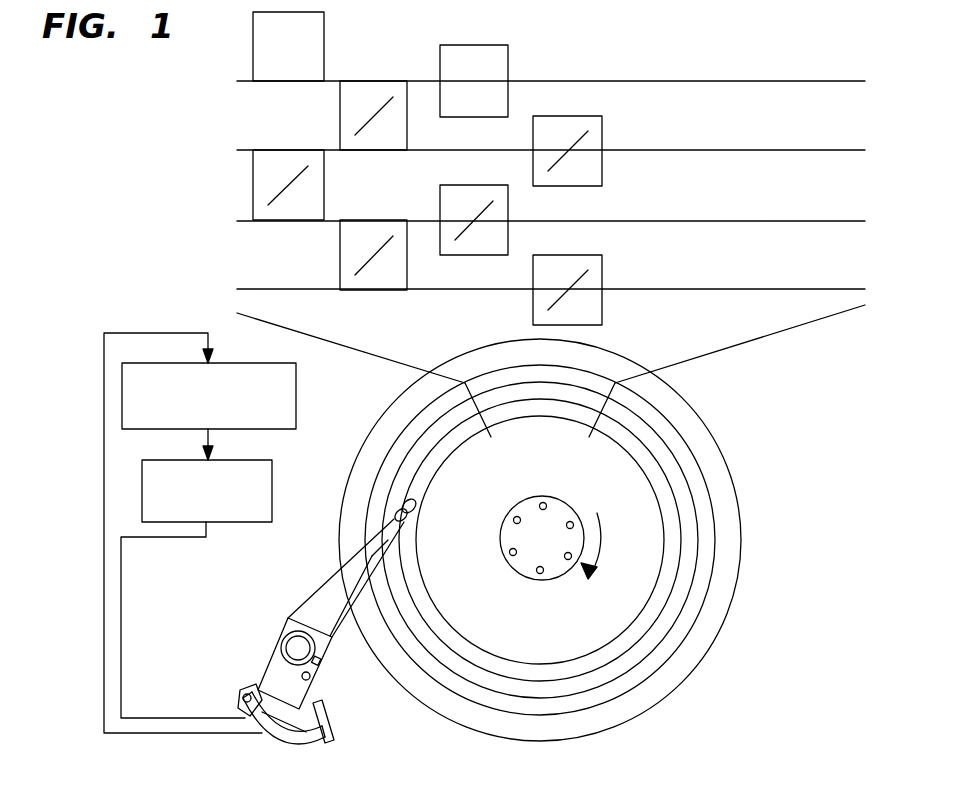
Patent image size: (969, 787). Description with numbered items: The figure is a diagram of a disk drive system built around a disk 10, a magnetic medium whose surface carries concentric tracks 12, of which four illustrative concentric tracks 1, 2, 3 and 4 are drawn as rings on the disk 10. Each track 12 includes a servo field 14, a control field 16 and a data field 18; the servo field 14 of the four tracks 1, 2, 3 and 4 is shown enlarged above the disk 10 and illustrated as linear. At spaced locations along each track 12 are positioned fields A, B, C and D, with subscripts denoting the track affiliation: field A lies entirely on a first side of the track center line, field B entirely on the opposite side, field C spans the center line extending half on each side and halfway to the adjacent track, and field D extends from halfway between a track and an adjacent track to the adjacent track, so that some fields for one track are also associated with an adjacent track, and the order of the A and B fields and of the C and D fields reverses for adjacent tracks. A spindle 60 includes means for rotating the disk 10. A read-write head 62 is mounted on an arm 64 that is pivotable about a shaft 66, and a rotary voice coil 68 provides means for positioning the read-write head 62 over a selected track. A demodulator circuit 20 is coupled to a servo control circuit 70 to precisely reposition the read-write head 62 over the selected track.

The concentric track 1 is at (713, 517).
The concentric track 2 is at (697, 550).
The concentric track 3 is at (677, 578).
The concentric track 4 is at (642, 610).
The disk 10 is at (717, 483).
The tracks 12 is at (224, 62).
The servo field 14 is at (595, 441).
The control field 16 is at (490, 447).
The data field 18 is at (639, 483).
The demodulator circuit 20 is at (296, 405).
The spindle 60 is at (542, 580).
The read-write head 62 is at (400, 499).
The arm 64 is at (318, 590).
The shaft 66 is at (292, 647).
The rotary voice coil 68 is at (239, 697).
The servo control circuit 70 is at (272, 505).